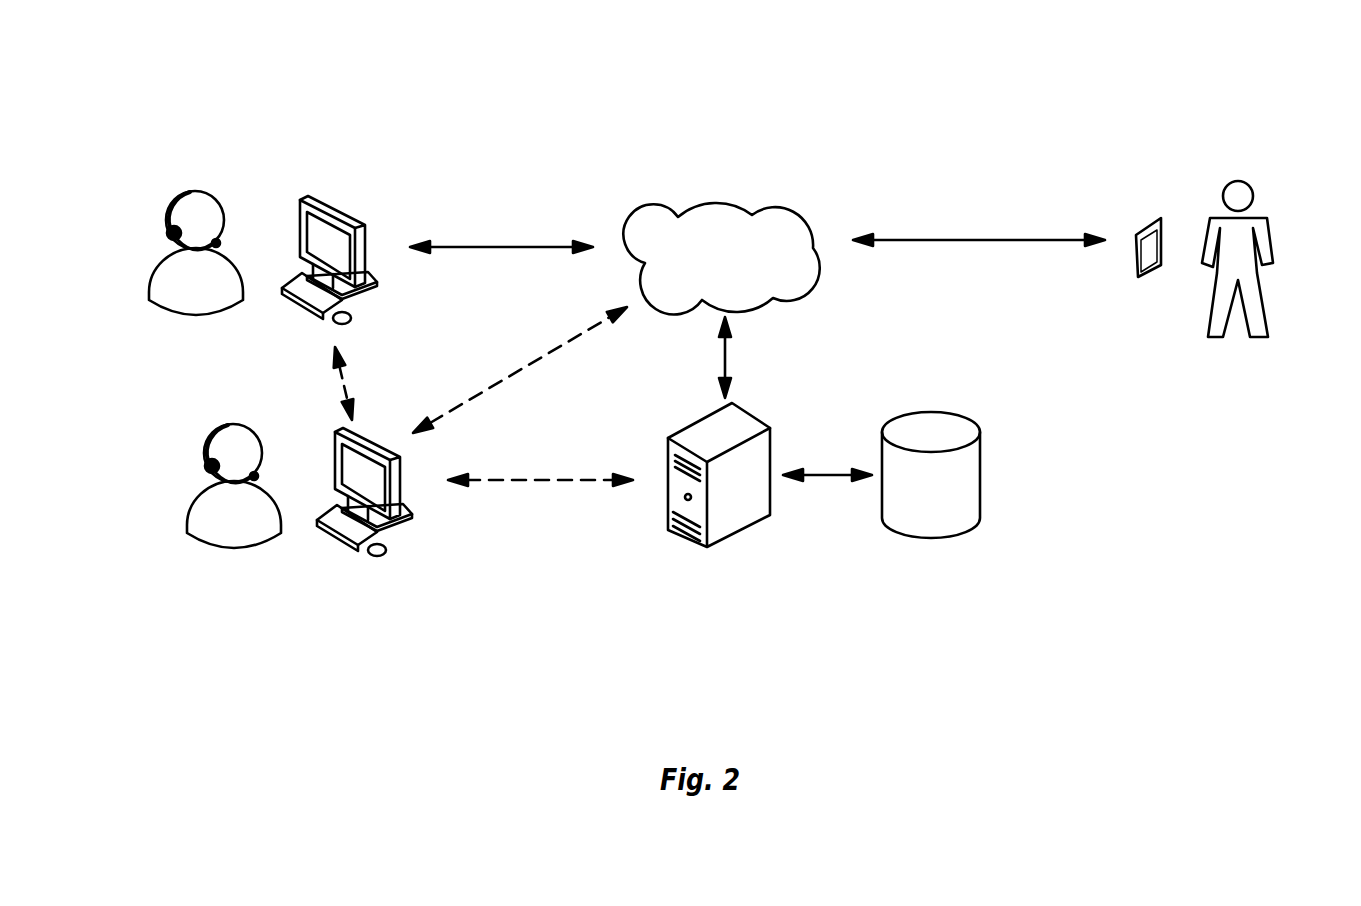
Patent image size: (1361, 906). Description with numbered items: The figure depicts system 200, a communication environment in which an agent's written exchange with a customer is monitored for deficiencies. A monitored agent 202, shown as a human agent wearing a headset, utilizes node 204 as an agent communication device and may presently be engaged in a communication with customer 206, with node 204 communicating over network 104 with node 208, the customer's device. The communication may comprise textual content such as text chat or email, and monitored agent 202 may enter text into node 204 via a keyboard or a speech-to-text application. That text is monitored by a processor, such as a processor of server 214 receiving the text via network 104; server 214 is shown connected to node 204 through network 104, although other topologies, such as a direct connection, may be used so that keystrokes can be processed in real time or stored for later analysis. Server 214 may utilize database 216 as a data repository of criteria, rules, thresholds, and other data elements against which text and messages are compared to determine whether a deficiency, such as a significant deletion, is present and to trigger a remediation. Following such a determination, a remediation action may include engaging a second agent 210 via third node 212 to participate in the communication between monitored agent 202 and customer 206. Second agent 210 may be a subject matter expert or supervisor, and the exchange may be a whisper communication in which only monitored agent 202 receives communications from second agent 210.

The system 200 is at (1279, 59).
The monitored agent 202 is at (200, 305).
The node 204 is at (357, 223).
The network 104 is at (793, 218).
The node 208 is at (1143, 225).
The customer 206 is at (1260, 220).
The second agent 210 is at (195, 540).
The third node 212 is at (370, 445).
The server 214 is at (745, 422).
The database 216 is at (937, 428).